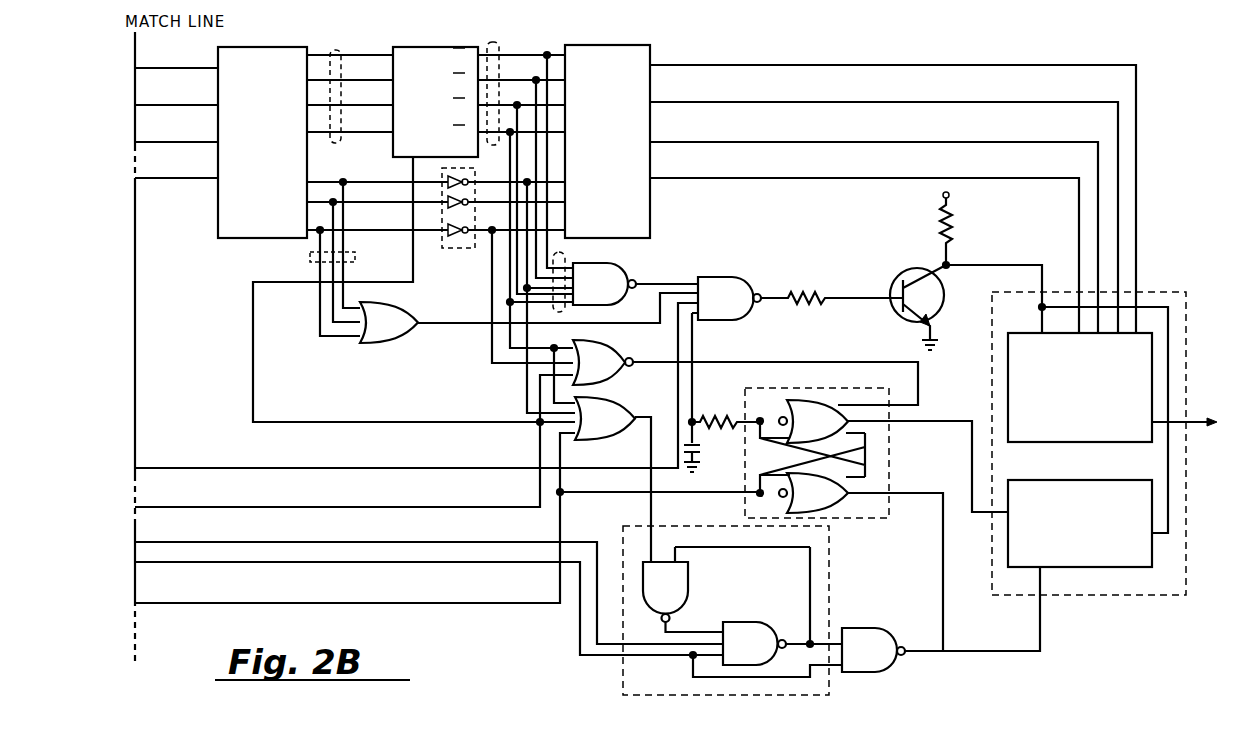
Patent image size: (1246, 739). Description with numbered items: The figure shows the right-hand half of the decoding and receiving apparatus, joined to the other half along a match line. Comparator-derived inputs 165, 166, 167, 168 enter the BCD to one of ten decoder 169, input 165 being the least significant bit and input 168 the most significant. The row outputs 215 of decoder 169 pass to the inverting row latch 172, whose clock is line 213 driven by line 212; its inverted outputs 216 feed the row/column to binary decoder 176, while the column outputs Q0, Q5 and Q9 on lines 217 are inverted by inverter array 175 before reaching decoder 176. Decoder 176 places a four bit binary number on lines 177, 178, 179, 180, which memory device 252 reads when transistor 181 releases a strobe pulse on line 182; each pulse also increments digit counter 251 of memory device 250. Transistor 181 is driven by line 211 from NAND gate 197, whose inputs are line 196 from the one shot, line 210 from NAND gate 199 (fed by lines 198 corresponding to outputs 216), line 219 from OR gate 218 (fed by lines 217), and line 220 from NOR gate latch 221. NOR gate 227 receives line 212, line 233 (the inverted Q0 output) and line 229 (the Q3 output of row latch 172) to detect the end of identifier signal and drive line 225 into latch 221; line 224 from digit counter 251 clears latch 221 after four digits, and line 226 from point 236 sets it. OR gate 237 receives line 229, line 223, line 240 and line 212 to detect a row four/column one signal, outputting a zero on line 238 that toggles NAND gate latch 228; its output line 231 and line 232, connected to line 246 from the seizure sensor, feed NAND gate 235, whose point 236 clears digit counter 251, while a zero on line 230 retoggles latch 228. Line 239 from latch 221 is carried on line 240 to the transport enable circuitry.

The input 165 is at (150, 67).
The input 166 is at (150, 104).
The input 167 is at (150, 141).
The input 168 is at (150, 177).
The BCD to one of ten decoder 169 is at (268, 47).
The row outputs 215 is at (336, 50).
The row latch 172 is at (418, 47).
The outputs 216 is at (495, 44).
The row/column to binary decoder 176 is at (625, 45).
The line 177 is at (770, 65).
The line 178 is at (770, 102).
The line 179 is at (765, 142).
The line 180 is at (790, 178).
The transistor 181 is at (913, 268).
The line 182 is at (985, 265).
The line 211 is at (860, 298).
The NAND gate 197 is at (728, 277).
The line 210 is at (678, 265).
The NAND gate 199 is at (622, 264).
The lines 198 is at (565, 266).
The NOR gate 227 is at (615, 350).
The OR gate 237 is at (612, 402).
The line 240 is at (563, 455).
The line 220 is at (697, 350).
The NOR gate latch 221 is at (760, 388).
The line 225 is at (920, 388).
The line 224 is at (942, 423).
The memory device 252 is at (1008, 347).
The digit counter 251 is at (1062, 480).
The memory device 250 is at (1100, 598).
The OR gate 218 is at (372, 343).
The line 219 is at (432, 323).
The line 213 is at (413, 260).
The lines 217 is at (310, 257).
The inverter array 175 is at (455, 248).
The line 229 is at (508, 283).
The line 233 is at (510, 367).
The line 223 is at (525, 400).
The line 196 is at (400, 468).
The line 212 is at (365, 507).
The line 230 is at (305, 542).
The line 246 is at (372, 562).
The line 238 is at (650, 505).
The line 239 is at (725, 492).
The line 232 is at (693, 677).
The NAND gate latch 228 is at (830, 560).
The line 231 is at (820, 640).
The NAND gate 235 is at (865, 628).
The line 226 is at (943, 620).
The point 236 is at (945, 655).